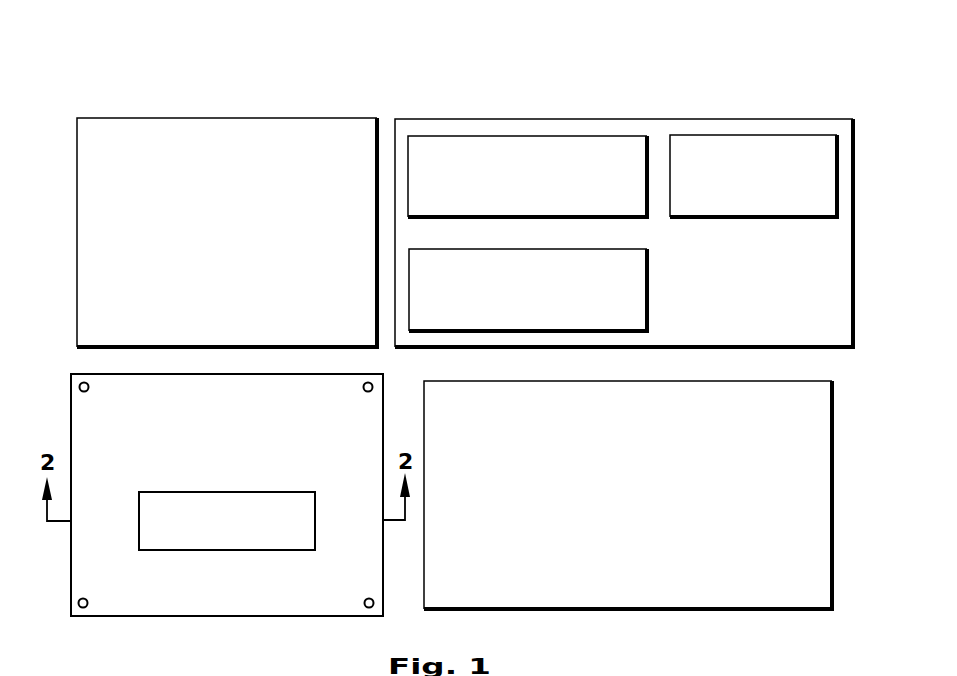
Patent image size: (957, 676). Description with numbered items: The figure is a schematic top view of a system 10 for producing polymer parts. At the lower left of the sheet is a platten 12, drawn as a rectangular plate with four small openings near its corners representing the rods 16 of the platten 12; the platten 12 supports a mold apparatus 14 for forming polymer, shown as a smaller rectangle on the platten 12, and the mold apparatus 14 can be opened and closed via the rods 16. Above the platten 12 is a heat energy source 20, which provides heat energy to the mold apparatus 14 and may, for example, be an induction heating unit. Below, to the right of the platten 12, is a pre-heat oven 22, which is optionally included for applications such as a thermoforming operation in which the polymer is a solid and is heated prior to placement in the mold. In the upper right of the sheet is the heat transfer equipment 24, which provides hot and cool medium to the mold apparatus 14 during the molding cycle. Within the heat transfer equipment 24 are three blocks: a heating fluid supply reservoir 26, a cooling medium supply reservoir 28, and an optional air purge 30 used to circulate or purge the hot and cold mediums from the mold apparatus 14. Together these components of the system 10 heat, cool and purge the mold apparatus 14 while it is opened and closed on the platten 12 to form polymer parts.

The system 10 is at (186, 66).
The platten 12 is at (71, 442).
The mold apparatus 14 is at (210, 551).
The rods 16 is at (83, 608).
The heat energy source 20 is at (76, 148).
The pre-heat oven 22 is at (832, 480).
The heat transfer equipment 24 is at (855, 187).
The heating fluid supply reservoir 26 is at (507, 136).
The cooling medium supply reservoir 28 is at (782, 135).
The air purge 30 is at (445, 332).